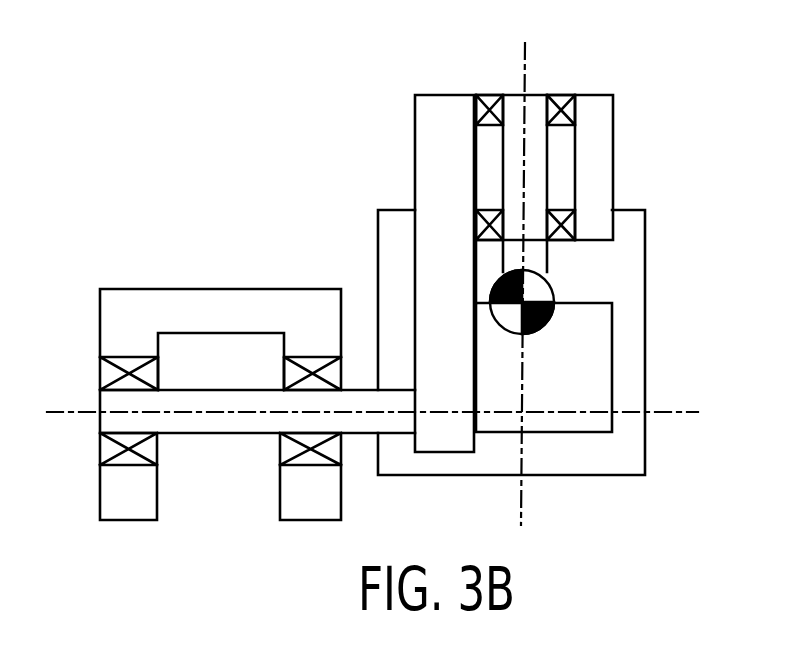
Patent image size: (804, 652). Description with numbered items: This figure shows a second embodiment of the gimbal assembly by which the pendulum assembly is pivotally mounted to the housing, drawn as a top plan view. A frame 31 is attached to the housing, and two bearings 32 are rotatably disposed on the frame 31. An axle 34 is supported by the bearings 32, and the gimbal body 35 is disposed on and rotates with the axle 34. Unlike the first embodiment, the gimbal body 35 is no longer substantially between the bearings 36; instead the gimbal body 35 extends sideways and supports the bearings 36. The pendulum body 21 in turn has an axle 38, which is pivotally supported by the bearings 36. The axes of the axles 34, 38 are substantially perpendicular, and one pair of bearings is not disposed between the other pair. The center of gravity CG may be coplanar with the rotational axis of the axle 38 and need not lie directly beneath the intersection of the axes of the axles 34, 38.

The pendulum body 21 is at (597, 367).
The frame 31 is at (221, 288).
The bearings 32 is at (110, 375).
The axle 34 is at (227, 413).
The gimbal body 35 is at (447, 110).
The bearings 36 is at (563, 100).
The axle 38 is at (527, 142).
The center of gravity CG is at (554, 285).